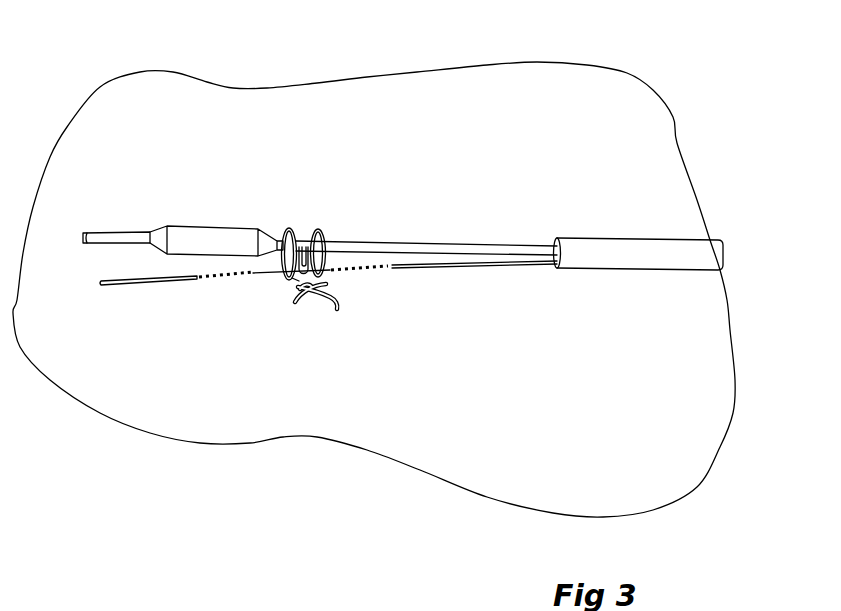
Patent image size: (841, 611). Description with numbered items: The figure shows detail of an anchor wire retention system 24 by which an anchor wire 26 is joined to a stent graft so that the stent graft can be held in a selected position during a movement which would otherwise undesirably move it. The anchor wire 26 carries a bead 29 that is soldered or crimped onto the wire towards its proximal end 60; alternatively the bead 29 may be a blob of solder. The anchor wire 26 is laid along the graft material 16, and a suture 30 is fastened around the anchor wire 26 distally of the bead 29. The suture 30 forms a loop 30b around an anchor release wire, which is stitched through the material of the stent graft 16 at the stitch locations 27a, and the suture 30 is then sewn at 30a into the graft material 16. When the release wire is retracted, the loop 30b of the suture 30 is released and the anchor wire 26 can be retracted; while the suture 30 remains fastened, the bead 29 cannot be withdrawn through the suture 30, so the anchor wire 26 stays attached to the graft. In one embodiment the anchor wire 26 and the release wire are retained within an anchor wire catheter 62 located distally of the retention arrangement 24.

The graft material 16 is at (430, 90).
The anchor wire retention system 24 is at (284, 219).
The anchor wire 26 is at (496, 249).
The stitch location of anchor release wire 27a is at (213, 280).
The bead 29 is at (208, 236).
The suture 30 is at (275, 264).
The sewn portion of suture 30a is at (309, 297).
The loop of suture 30b is at (298, 280).
The proximal end of anchor wire 60 is at (88, 231).
The anchor wire catheter 62 is at (632, 257).